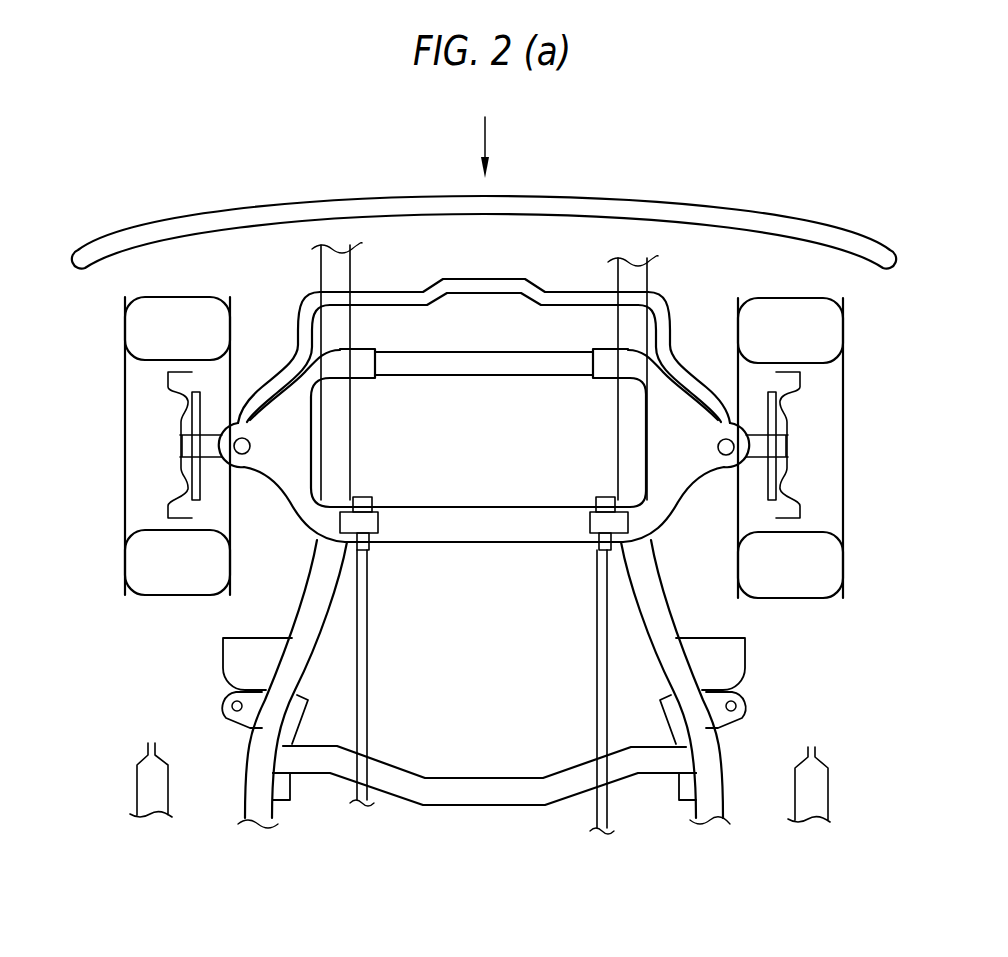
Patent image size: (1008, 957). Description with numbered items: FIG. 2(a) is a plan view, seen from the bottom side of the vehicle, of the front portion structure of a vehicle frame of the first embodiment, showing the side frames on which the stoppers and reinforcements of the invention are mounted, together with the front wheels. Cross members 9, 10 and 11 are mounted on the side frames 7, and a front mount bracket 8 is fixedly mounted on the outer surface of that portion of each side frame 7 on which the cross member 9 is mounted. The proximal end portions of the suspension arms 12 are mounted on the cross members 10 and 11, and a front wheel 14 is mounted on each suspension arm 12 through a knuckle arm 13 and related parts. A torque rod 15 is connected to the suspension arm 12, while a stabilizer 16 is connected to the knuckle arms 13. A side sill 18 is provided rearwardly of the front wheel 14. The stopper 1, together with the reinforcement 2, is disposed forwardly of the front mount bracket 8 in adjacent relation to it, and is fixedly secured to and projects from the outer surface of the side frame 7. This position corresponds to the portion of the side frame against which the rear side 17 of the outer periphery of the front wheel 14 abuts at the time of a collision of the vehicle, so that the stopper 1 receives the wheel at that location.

The stopper 1 is at (237, 650).
The reinforcement 2 is at (288, 786).
The side frame 7 is at (255, 772).
The front mount bracket 8 is at (233, 715).
The cross member 9 is at (477, 790).
The cross member 10 is at (502, 533).
The cross member 11 is at (500, 362).
The suspension arm 12 is at (293, 467).
The knuckle arm 13 is at (210, 442).
The front wheel 14 is at (143, 328).
The torque rod 15 is at (365, 687).
The stabilizer 16 is at (496, 285).
The rear side of the outer periphery of the front wheel 17 is at (158, 604).
The side sill 18 is at (148, 777).